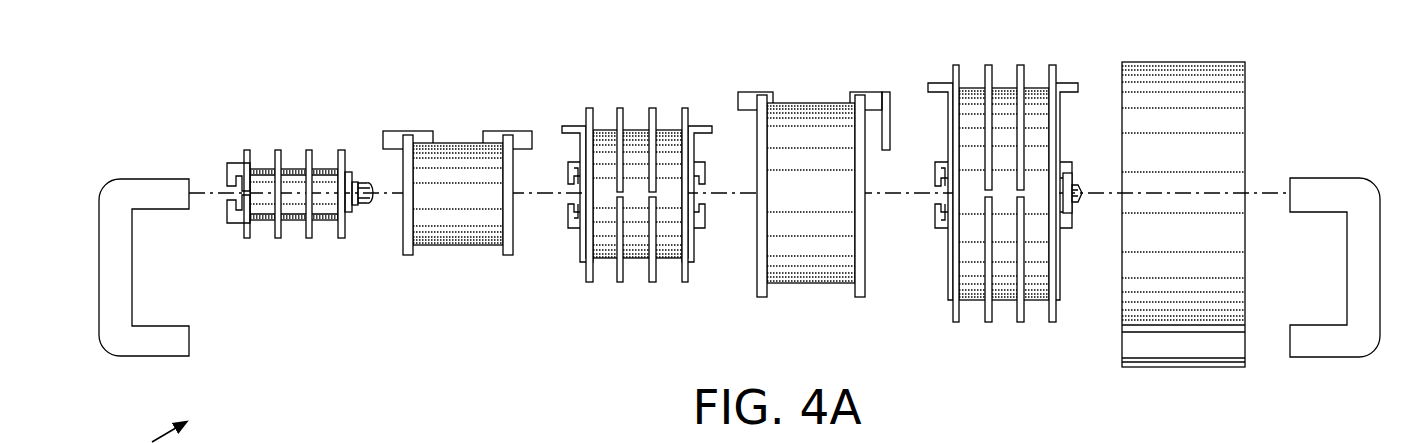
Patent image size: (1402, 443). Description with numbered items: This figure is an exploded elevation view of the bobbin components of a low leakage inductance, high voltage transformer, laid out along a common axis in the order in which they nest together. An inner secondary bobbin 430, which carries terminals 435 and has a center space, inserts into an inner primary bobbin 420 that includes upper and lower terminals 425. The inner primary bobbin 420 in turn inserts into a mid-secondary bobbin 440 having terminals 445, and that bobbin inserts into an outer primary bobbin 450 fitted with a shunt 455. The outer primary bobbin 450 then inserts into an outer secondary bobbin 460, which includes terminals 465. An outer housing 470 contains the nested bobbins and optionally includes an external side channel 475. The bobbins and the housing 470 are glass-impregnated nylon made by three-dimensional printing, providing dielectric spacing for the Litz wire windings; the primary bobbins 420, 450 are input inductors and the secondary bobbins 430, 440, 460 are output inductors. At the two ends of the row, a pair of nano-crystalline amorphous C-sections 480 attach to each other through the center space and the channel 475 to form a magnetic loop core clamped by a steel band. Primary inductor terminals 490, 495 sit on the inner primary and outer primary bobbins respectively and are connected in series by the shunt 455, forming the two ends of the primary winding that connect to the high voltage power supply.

The inner primary bobbin 420 is at (429, 227).
The upper and lower terminals 425 is at (383, 132).
The inner secondary bobbin 430 is at (280, 261).
The terminals 435 is at (218, 235).
The mid-secondary bobbin 440 is at (608, 222).
The terminals 445 is at (690, 322).
The outer primary bobbin 450 is at (833, 208).
The shunt 455 is at (888, 120).
The outer secondary bobbin 460 is at (1015, 217).
The terminals 465 is at (982, 235).
The outer housing 470 is at (1219, 250).
The external side channel 475 is at (1120, 388).
The nano-crystalline amorphous C-sections 480 is at (90, 148).
The primary inductor terminal 490 is at (562, 128).
The primary inductor terminal 495 is at (1080, 88).